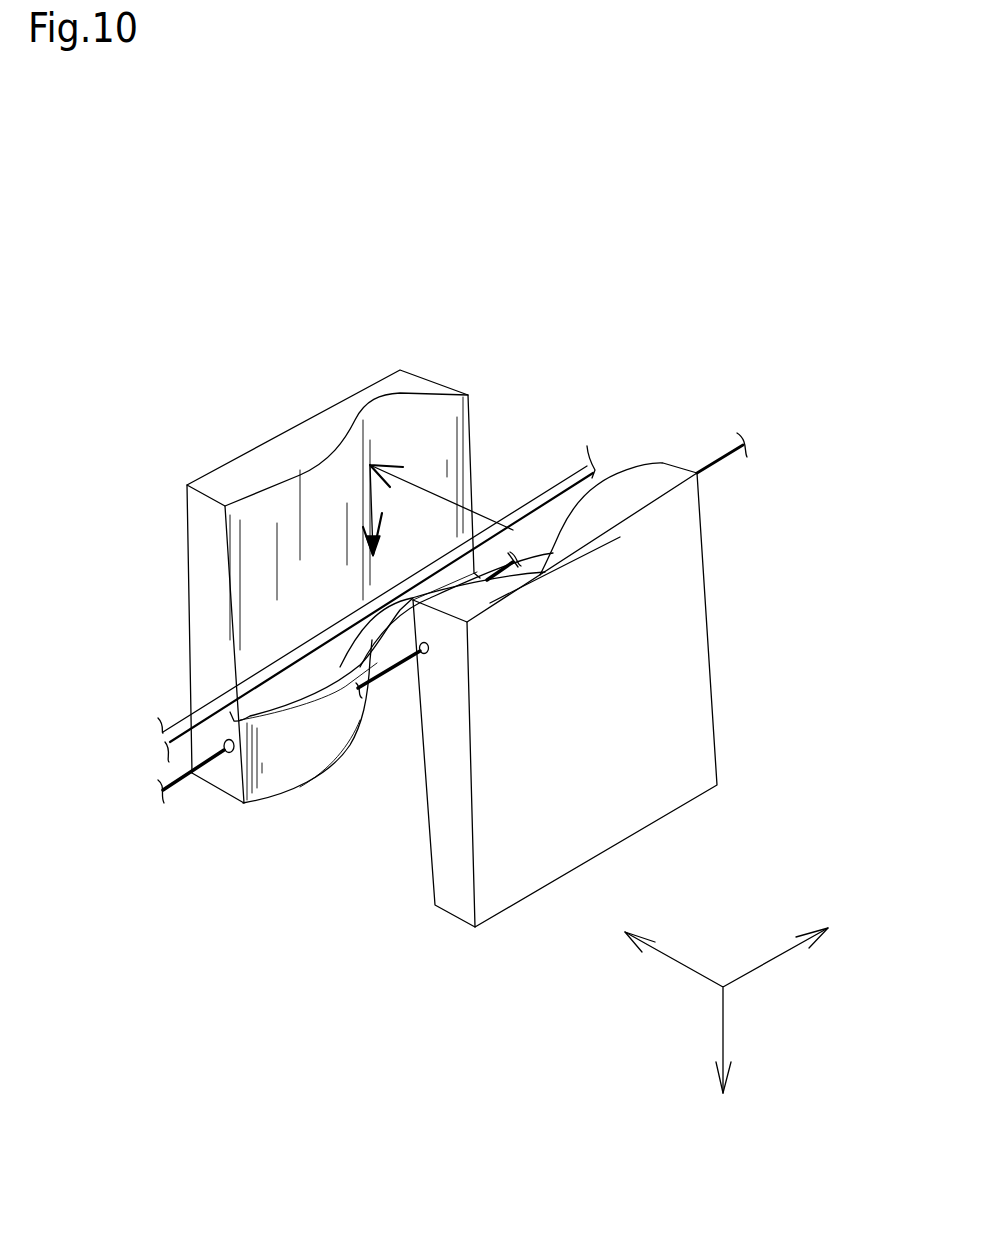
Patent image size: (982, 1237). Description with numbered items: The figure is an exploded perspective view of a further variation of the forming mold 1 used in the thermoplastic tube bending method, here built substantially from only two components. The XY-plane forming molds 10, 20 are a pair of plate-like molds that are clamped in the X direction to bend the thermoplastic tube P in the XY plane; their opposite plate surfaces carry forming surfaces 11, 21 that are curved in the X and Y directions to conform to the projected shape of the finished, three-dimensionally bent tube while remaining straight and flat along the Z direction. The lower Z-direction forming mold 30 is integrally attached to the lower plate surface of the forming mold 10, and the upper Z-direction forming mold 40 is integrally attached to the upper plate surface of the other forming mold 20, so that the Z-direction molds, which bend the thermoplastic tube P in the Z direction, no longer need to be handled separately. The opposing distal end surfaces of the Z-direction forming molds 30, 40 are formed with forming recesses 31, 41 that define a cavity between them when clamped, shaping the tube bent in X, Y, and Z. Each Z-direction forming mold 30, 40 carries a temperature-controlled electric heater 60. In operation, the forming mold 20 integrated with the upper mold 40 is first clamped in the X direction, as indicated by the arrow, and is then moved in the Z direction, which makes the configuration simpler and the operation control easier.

The forming mold 1 is at (178, 496).
The XY-plane forming mold 10 is at (205, 562).
The forming surface 11 is at (298, 540).
The XY-plane forming mold 20 is at (632, 638).
The forming surface 21 is at (410, 767).
The Z-direction forming mold 30 is at (237, 782).
The forming recess 31 is at (317, 683).
The Z-direction forming mold 40 is at (553, 557).
The forming recess 41 is at (427, 684).
The temperature-controlled electric heater 60 is at (230, 757).
The thermoplastic tube P is at (263, 675).